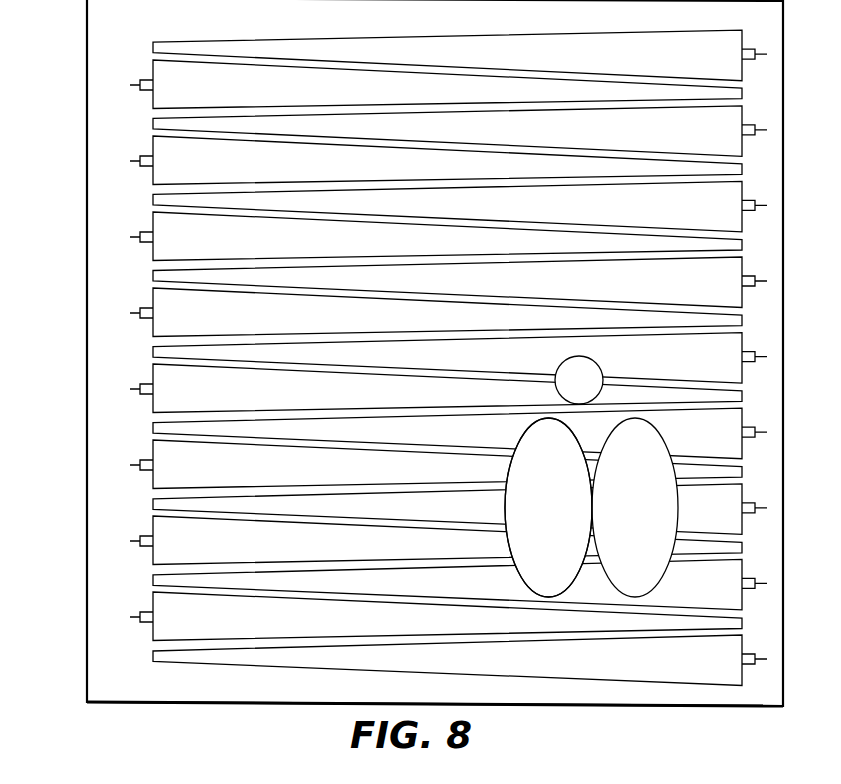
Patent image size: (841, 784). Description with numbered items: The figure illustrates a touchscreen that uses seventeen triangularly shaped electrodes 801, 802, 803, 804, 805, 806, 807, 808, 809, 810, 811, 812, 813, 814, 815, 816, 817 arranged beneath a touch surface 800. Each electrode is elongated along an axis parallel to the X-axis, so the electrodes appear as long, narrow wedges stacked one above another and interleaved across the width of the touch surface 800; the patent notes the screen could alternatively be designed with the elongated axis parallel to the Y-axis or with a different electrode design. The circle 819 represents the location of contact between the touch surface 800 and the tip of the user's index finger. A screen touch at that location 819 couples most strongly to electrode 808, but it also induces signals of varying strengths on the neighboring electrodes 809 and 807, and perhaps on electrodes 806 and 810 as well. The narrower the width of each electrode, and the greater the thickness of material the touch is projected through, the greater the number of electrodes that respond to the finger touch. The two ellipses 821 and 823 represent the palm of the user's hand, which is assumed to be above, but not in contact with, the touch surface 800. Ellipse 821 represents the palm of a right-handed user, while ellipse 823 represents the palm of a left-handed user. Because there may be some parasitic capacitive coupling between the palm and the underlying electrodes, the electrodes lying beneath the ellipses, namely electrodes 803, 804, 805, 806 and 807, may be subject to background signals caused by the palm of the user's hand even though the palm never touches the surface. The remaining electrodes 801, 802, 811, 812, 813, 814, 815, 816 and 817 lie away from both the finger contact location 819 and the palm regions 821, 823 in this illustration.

The touch surface 800 is at (124, 735).
The triangularly shaped electrode 801 is at (725, 668).
The triangularly shaped electrode 802 is at (222, 628).
The triangularly shaped electrode 803 is at (725, 593).
The triangularly shaped electrode 804 is at (222, 552).
The triangularly shaped electrode 805 is at (725, 517).
The triangularly shaped electrode 806 is at (222, 476).
The triangularly shaped electrode 807 is at (725, 442).
The triangularly shaped electrode 808 is at (222, 400).
The triangularly shaped electrode 809 is at (725, 366).
The triangularly shaped electrode 810 is at (222, 324).
The triangularly shaped electrode 811 is at (725, 290).
The triangularly shaped electrode 812 is at (222, 248).
The triangularly shaped electrode 813 is at (725, 215).
The triangularly shaped electrode 814 is at (222, 172).
The triangularly shaped electrode 815 is at (725, 139).
The triangularly shaped electrode 816 is at (222, 96).
The triangularly shaped electrode 817 is at (725, 64).
The circle 819 is at (599, 392).
The ellipse 821 is at (655, 518).
The ellipse 823 is at (591, 507).